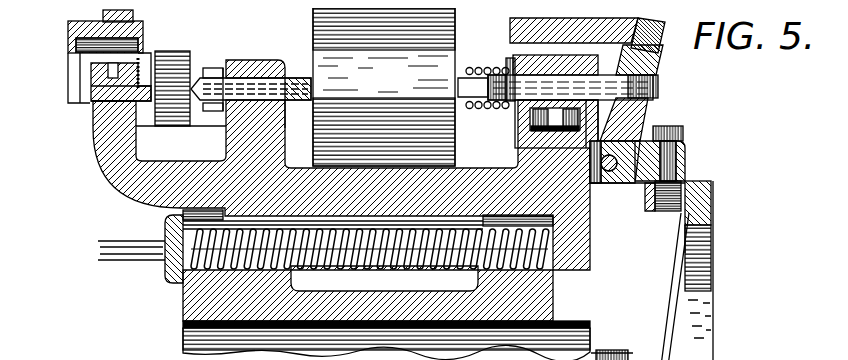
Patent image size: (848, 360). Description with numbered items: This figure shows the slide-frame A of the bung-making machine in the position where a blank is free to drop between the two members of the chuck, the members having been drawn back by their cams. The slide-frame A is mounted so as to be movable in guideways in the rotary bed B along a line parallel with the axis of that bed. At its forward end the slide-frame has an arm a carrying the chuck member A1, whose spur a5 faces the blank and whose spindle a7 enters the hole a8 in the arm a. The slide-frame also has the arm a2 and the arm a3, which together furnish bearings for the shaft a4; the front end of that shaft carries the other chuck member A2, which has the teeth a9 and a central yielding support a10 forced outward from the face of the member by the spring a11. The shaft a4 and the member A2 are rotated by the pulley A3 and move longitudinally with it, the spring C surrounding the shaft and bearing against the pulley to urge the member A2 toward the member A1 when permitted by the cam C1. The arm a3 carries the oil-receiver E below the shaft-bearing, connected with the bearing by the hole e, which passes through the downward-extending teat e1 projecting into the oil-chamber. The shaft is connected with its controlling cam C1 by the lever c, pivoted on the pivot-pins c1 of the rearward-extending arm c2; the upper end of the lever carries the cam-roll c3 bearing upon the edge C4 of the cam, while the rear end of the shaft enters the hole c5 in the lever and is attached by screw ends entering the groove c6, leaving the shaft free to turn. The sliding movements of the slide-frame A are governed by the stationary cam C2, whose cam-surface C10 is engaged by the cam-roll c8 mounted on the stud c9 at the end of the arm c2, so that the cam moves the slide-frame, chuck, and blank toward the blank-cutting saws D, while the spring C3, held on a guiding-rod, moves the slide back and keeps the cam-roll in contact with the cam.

The blank-cutting saws D is at (62, 28).
The member of blank chuck or holder A1 is at (83, 80).
The spindle a7 is at (82, 92).
The arm or standard a is at (139, 74).
The spur a5 is at (158, 66).
The slide-frame A is at (118, 194).
The hole a8 is at (138, 118).
The arm or standard a2 is at (244, 54).
The member of chuck or blank holder A2 is at (216, 56).
The central yielding support a10 is at (197, 64).
The teeth a9 is at (198, 96).
The spring a11 is at (285, 70).
The shaft a4 is at (297, 95).
The pulley A3 is at (384, 87).
The oil-receiver E is at (512, 121).
The cam C1 is at (503, 18).
The cam-roll c3 is at (651, 36).
The edge of the cam C4 is at (552, 72).
The arm or standard a3 is at (584, 70).
The spring C is at (468, 59).
The recess or groove c6 is at (649, 60).
The hole c5 is at (650, 86).
The lever c is at (633, 103).
The hole e is at (579, 105).
The teat or section e1 is at (598, 148).
The stud c9 is at (678, 160).
The rearward-extending arm c2 is at (680, 140).
The cam-roll c8 is at (638, 200).
The pivot-pins c1 is at (603, 177).
The cam C2 is at (703, 277).
The cam-surface C10 is at (667, 290).
The spring C3 is at (368, 251).
The rotary bed B is at (176, 295).